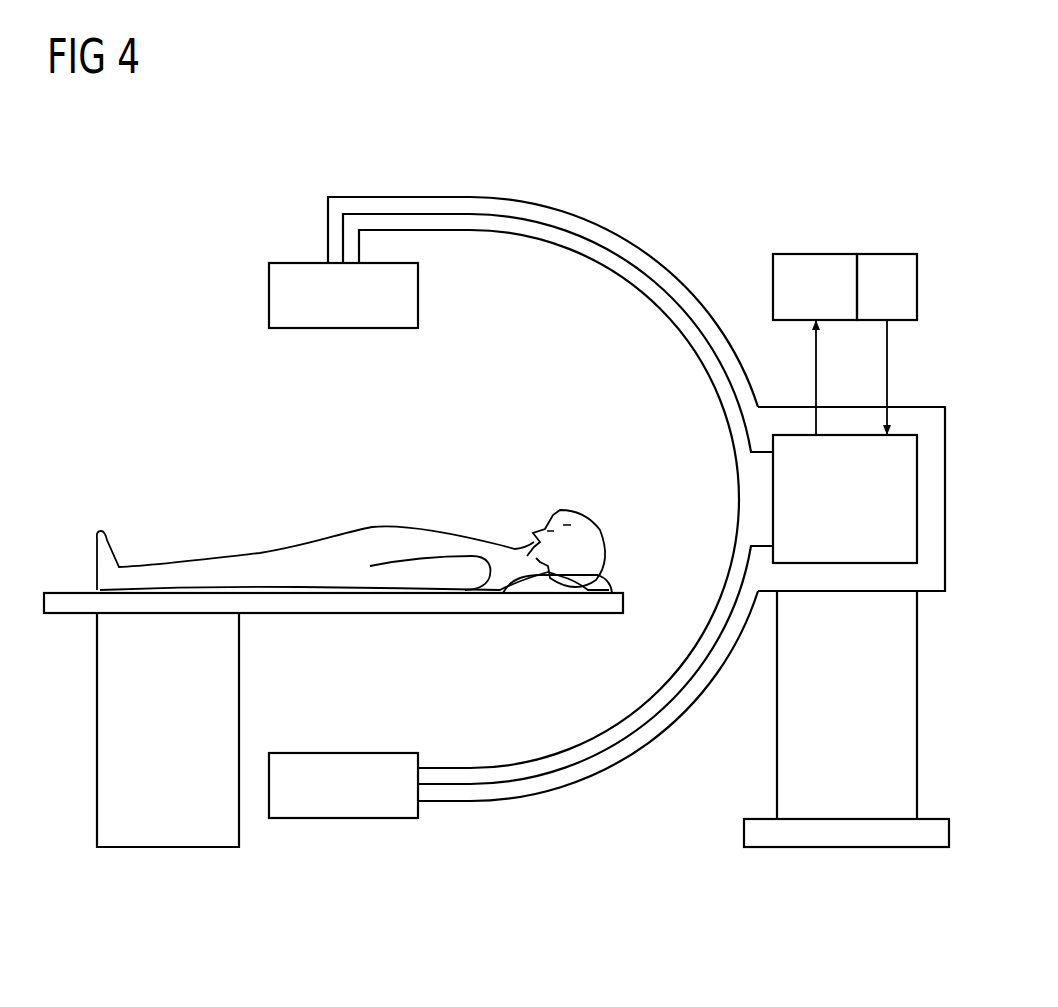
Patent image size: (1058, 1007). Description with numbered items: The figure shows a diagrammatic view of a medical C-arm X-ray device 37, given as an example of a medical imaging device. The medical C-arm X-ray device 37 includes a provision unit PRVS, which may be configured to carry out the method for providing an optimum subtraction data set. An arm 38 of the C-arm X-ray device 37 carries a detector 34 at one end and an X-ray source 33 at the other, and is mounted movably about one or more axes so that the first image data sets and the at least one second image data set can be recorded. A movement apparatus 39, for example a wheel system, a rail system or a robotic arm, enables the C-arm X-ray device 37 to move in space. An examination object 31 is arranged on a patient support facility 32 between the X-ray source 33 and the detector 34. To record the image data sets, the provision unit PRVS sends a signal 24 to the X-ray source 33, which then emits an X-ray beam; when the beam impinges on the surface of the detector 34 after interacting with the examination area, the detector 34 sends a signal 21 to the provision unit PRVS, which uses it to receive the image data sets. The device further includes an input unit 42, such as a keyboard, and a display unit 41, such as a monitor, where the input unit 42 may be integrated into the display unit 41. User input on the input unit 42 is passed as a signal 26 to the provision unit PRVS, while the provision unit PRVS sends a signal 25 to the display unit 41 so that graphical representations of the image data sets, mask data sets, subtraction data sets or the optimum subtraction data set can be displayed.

The signal 21 is at (426, 212).
The signal 24 is at (515, 784).
The signal 25 is at (814, 354).
The signal 26 is at (890, 343).
The examination object 31 is at (403, 527).
The patient support facility 32 is at (150, 860).
The X-ray source 33 is at (346, 820).
The detector 34 is at (296, 262).
The medical C-arm X-ray device 37 is at (583, 184).
The arm 38 is at (378, 195).
The movement apparatus 39 is at (845, 850).
The display unit 41 is at (810, 252).
The input unit 42 is at (884, 252).
The provision unit PRVS is at (855, 565).